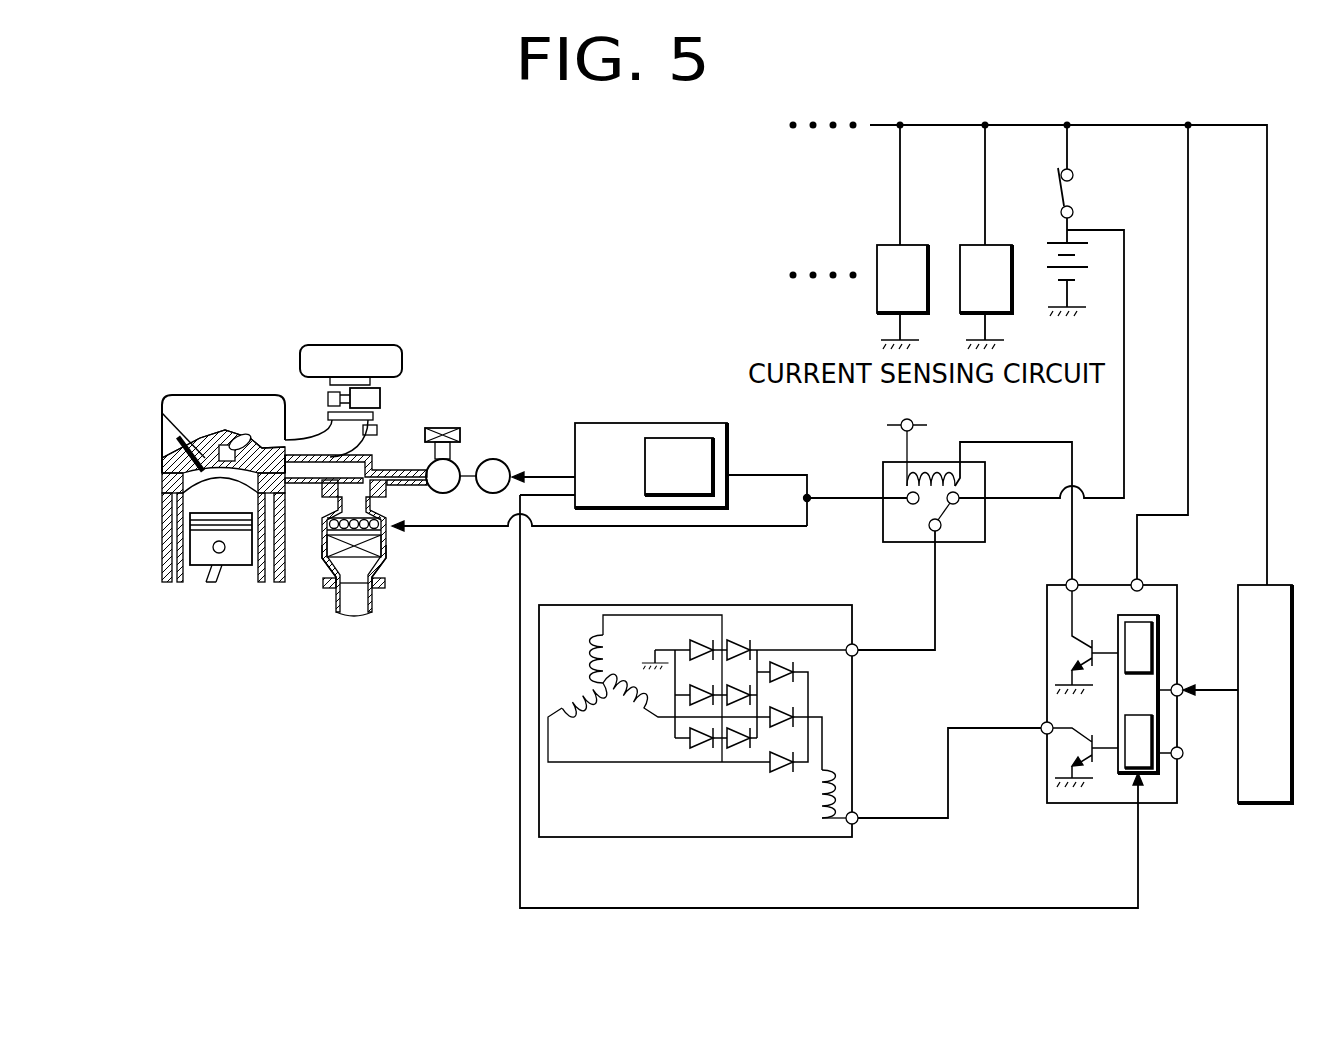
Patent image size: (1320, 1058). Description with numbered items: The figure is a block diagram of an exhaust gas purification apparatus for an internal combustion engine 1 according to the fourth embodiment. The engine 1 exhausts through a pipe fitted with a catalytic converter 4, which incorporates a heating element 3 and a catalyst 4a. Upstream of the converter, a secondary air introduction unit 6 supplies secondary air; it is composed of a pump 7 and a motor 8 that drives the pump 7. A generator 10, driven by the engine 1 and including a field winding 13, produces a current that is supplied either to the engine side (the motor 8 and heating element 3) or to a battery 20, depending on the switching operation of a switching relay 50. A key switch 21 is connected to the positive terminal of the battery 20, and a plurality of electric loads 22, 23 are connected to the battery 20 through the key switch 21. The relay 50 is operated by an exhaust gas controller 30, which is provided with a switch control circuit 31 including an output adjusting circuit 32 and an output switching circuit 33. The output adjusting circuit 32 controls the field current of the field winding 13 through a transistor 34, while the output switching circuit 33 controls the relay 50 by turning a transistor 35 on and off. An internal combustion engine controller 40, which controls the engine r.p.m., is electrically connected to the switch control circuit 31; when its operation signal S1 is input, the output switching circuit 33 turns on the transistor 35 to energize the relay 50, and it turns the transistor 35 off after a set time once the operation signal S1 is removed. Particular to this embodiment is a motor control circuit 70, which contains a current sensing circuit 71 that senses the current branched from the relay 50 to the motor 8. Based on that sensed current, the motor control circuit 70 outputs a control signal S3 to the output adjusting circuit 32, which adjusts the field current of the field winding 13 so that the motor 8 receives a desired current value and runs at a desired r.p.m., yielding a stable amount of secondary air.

The internal combustion engine 1 is at (214, 395).
The heating element 3 is at (392, 545).
The catalytic converter 4 is at (320, 563).
The catalyst 4a is at (385, 560).
The secondary air introduction unit 6 is at (558, 367).
The pump 7 is at (447, 427).
The motor 8 is at (498, 458).
The motor control circuit 70 is at (670, 423).
The current sensing circuit 71 is at (693, 451).
The control signal S3 is at (520, 622).
The switching relay 50 is at (987, 542).
The electric load 23 is at (877, 248).
The electric load 22 is at (960, 248).
The key switch 21 is at (1060, 185).
The battery 20 is at (1047, 273).
The generator 10 is at (698, 754).
The field winding 13 is at (812, 800).
The exhaust gas controller 30 is at (1180, 803).
The transistor 35 is at (1068, 642).
The transistor 34 is at (1068, 760).
The switch control circuit 31 is at (1118, 712).
The output switching circuit 33 is at (1137, 637).
The output adjusting circuit 32 is at (1125, 775).
The operation signal S1 is at (1210, 690).
The internal combustion engine controller 40 is at (1290, 585).